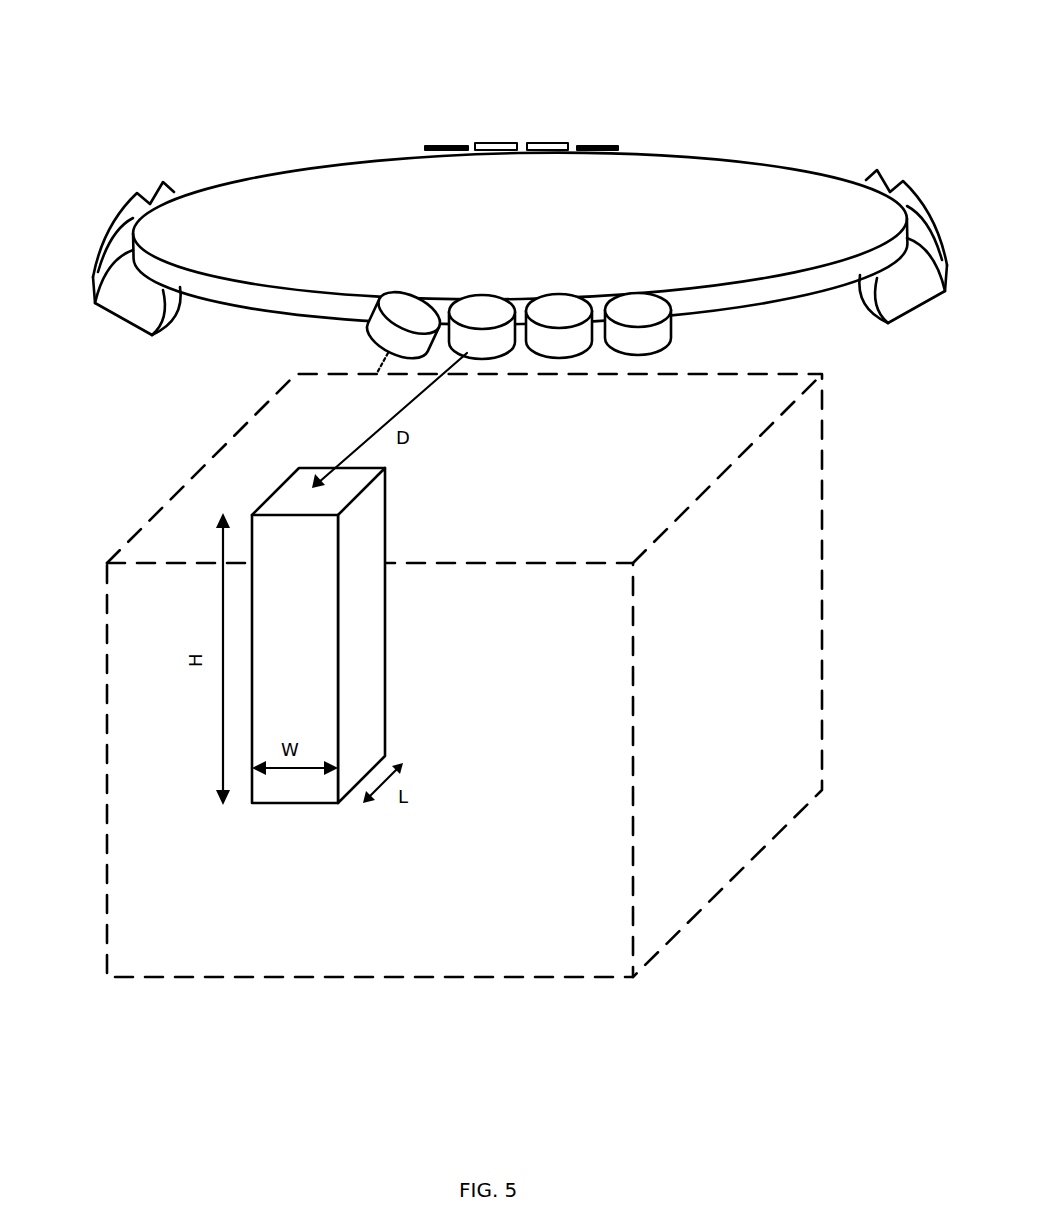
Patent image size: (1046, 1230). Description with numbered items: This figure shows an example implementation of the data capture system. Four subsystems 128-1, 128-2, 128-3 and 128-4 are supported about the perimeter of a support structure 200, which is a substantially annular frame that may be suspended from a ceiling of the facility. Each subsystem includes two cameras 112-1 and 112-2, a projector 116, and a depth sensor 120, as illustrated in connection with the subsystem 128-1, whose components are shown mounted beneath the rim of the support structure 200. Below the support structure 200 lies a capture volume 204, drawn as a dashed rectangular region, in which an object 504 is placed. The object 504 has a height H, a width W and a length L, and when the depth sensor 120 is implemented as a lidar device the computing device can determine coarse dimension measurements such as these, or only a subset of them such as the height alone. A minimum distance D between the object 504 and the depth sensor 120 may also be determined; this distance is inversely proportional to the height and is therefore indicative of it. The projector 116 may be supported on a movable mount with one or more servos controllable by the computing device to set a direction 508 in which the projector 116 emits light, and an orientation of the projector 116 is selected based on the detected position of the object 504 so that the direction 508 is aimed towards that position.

The support structure 200 is at (680, 187).
The capture volume 204 is at (740, 873).
The subsystem 128-1 is at (688, 341).
The subsystem 128-2 is at (110, 193).
The subsystem 128-3 is at (522, 113).
The subsystem 128-4 is at (898, 170).
The projector 116 is at (395, 287).
The depth sensor 120 is at (480, 292).
The camera 112-1 is at (561, 292).
The camera 112-2 is at (638, 290).
The object 504 is at (318, 805).
The direction 508 is at (378, 383).